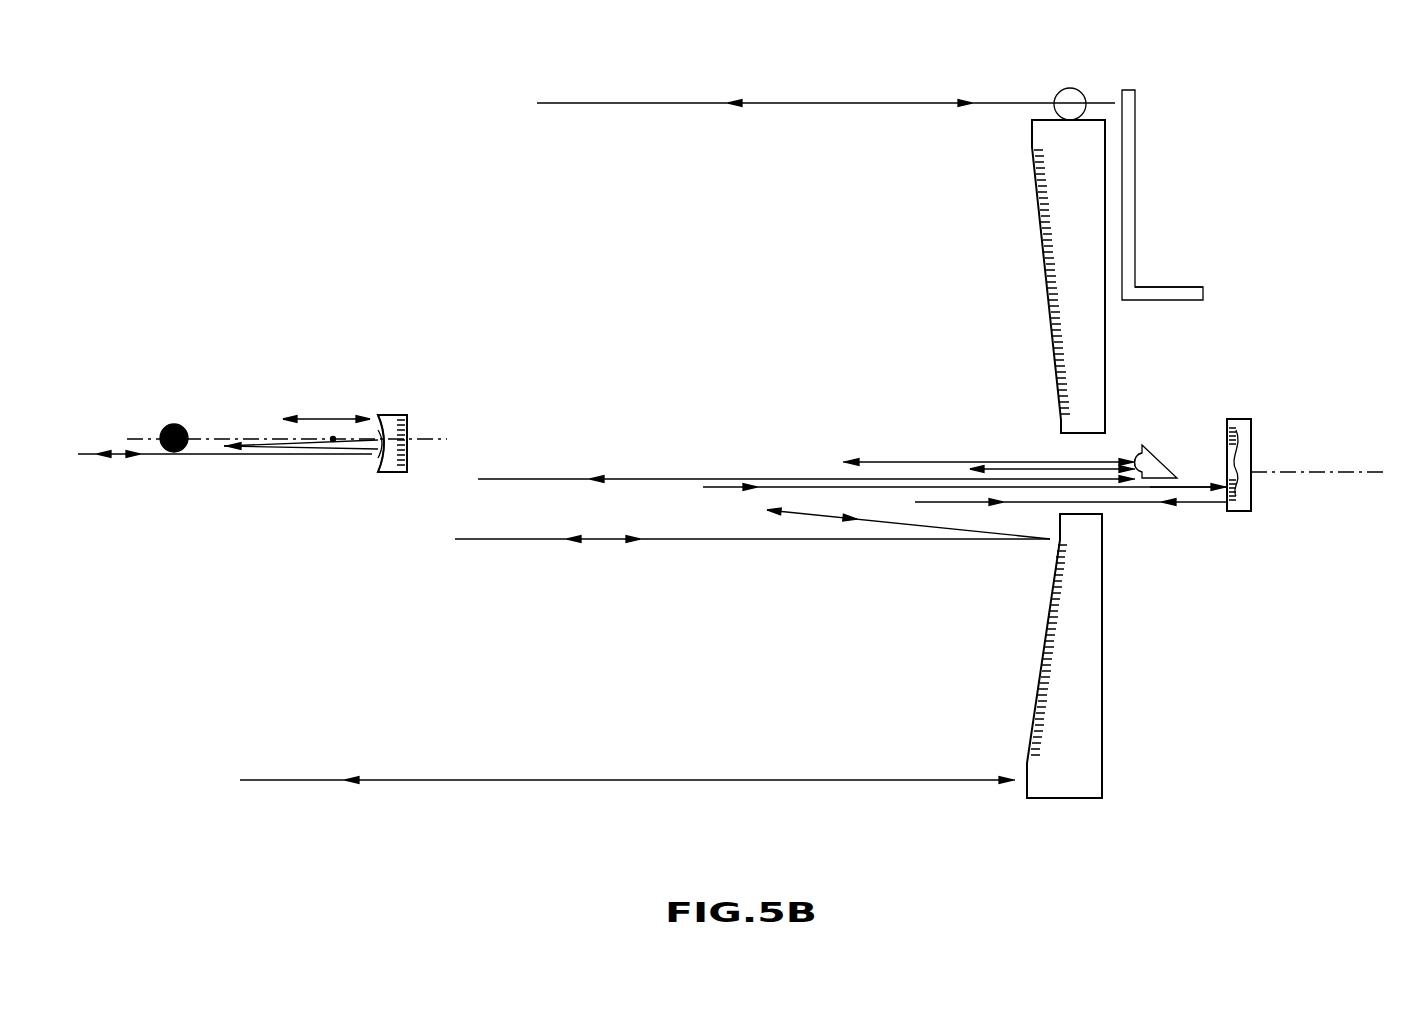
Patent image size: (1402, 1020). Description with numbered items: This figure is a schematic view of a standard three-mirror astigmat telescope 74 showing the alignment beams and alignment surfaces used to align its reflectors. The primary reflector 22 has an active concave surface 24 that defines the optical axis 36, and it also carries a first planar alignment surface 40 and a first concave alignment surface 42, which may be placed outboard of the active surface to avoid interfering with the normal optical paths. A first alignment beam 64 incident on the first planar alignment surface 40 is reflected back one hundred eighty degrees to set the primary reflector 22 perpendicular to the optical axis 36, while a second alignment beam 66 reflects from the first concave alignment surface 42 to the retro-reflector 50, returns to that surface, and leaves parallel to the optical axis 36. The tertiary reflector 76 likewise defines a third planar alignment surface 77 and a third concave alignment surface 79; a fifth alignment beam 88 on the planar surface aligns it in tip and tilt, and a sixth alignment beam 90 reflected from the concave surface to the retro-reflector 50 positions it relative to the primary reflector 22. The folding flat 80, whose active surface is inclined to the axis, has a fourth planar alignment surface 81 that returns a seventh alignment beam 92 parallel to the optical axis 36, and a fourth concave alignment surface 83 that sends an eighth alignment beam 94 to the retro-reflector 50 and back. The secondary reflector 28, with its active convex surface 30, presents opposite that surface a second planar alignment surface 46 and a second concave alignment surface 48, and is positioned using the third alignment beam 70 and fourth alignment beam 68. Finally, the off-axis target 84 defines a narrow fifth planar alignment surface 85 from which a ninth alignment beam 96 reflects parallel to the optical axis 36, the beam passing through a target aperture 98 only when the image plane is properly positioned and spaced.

The primary reflector 22 is at (1082, 710).
The active concave surface 24 is at (1043, 652).
The secondary reflector 28 is at (396, 415).
The active convex surface 30 is at (407, 428).
The optical axis 36 is at (305, 443).
The first planar alignment surface 40 is at (1027, 783).
The first concave alignment surface 42 is at (1058, 520).
The second planar alignment surface 46 is at (380, 422).
The second concave alignment surface 48 is at (376, 448).
The retro-reflector 50 is at (193, 407).
The first alignment beam 64 is at (578, 770).
The second alignment beam 66 is at (508, 540).
The fourth alignment beam 68 is at (140, 455).
The third alignment beam 70 is at (330, 418).
The 3-mirror astigmat telescope 74 is at (390, 86).
The tertiary reflector 76 is at (1243, 422).
The third planar alignment surface 77 is at (1229, 430).
The third concave alignment surface 79 is at (1238, 462).
The folding flat 80 is at (1157, 463).
The fourth planar alignment surface 81 is at (1140, 455).
The fourth concave alignment surface 83 is at (1135, 465).
The off-axis target 84 is at (1170, 291).
The fifth planar alignment surface 85 is at (1120, 95).
The fifth alignment beam 88 is at (1135, 503).
The sixth alignment beam 90 is at (1195, 487).
The seventh alignment beam 92 is at (690, 478).
The eighth alignment beam 94 is at (938, 462).
The ninth alignment beam 96 is at (785, 102).
The target aperture 98 is at (1066, 89).